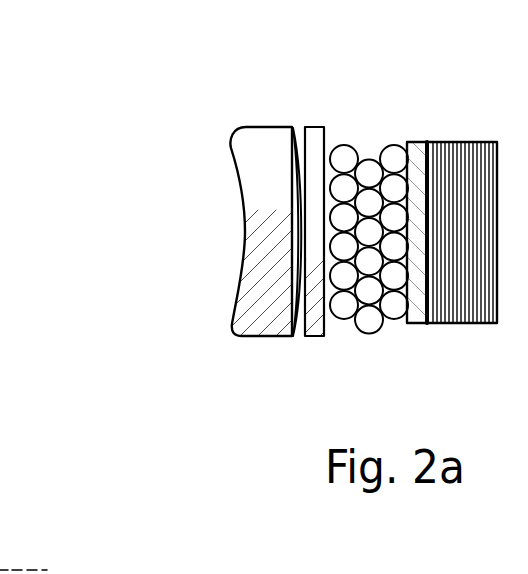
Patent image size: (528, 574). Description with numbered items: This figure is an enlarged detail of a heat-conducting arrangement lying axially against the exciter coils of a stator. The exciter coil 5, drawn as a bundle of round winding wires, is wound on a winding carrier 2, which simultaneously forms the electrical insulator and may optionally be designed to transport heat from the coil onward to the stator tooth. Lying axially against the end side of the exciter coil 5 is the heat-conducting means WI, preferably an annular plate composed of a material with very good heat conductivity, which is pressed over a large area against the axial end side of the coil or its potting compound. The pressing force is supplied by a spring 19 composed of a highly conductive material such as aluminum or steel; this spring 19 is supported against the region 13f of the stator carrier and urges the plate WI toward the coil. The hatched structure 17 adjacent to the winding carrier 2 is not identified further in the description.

The region of the stator carrier 13f is at (268, 138).
The spring 19 is at (300, 207).
The heat-conducting means WI is at (311, 128).
The exciter coil 5 is at (367, 284).
The winding carrier 2 is at (448, 222).
The striped structure 17 is at (457, 183).